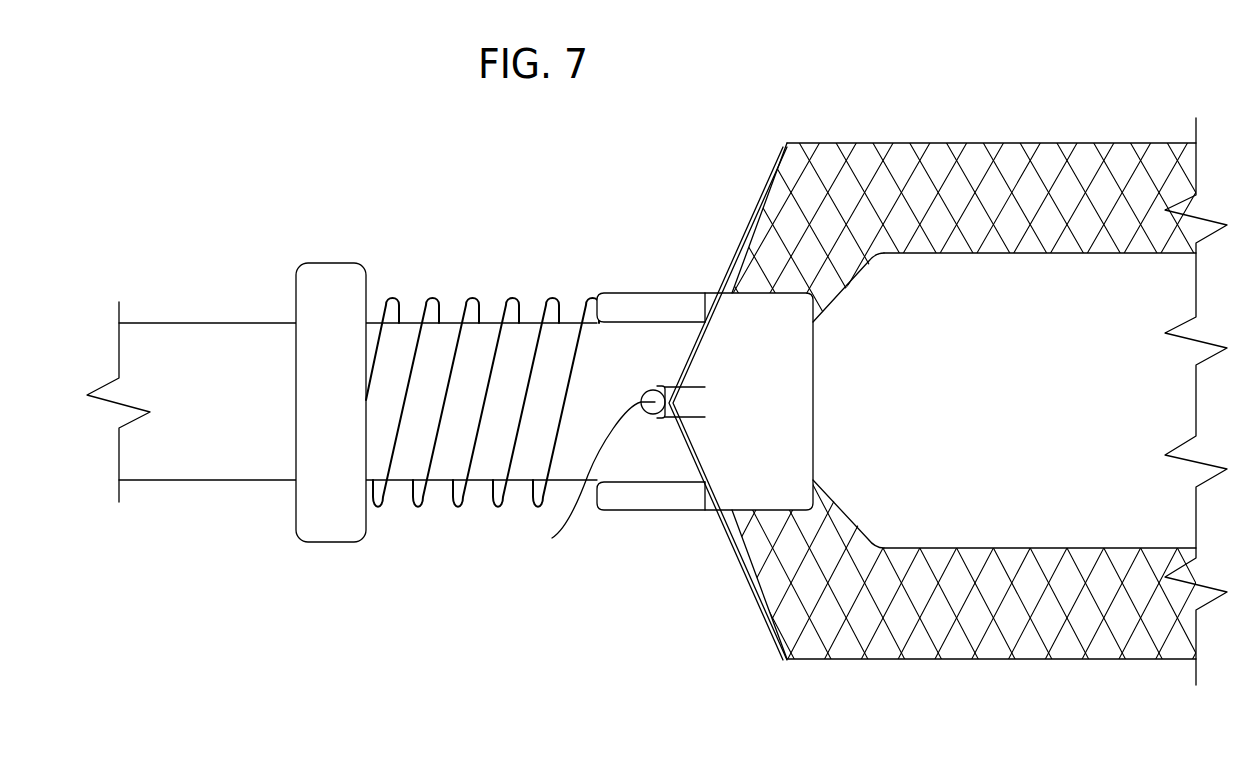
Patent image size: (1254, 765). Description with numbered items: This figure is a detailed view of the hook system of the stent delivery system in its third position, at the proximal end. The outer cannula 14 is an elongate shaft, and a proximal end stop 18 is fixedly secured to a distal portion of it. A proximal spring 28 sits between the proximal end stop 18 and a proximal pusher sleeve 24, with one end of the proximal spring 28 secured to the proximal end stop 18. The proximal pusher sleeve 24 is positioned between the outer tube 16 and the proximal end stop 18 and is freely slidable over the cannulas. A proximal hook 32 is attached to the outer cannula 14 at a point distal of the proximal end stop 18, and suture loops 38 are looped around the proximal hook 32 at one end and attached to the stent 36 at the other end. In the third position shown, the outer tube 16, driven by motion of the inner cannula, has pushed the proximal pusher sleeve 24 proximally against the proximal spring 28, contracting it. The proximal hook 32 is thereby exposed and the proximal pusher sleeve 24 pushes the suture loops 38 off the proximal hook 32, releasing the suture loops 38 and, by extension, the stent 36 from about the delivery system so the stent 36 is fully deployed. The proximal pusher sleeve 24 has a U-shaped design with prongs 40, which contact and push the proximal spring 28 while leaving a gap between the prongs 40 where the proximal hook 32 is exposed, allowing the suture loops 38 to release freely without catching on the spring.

The outer cannula 14 is at (213, 323).
The outer tube 16 is at (1067, 303).
The proximal end stop 18 is at (331, 263).
The proximal pusher sleeve 24 is at (783, 293).
The proximal spring 28 is at (513, 298).
The proximal hook 32 is at (552, 538).
The stent 36 is at (937, 143).
The suture loops 38 is at (750, 214).
The prongs 40 is at (640, 293).